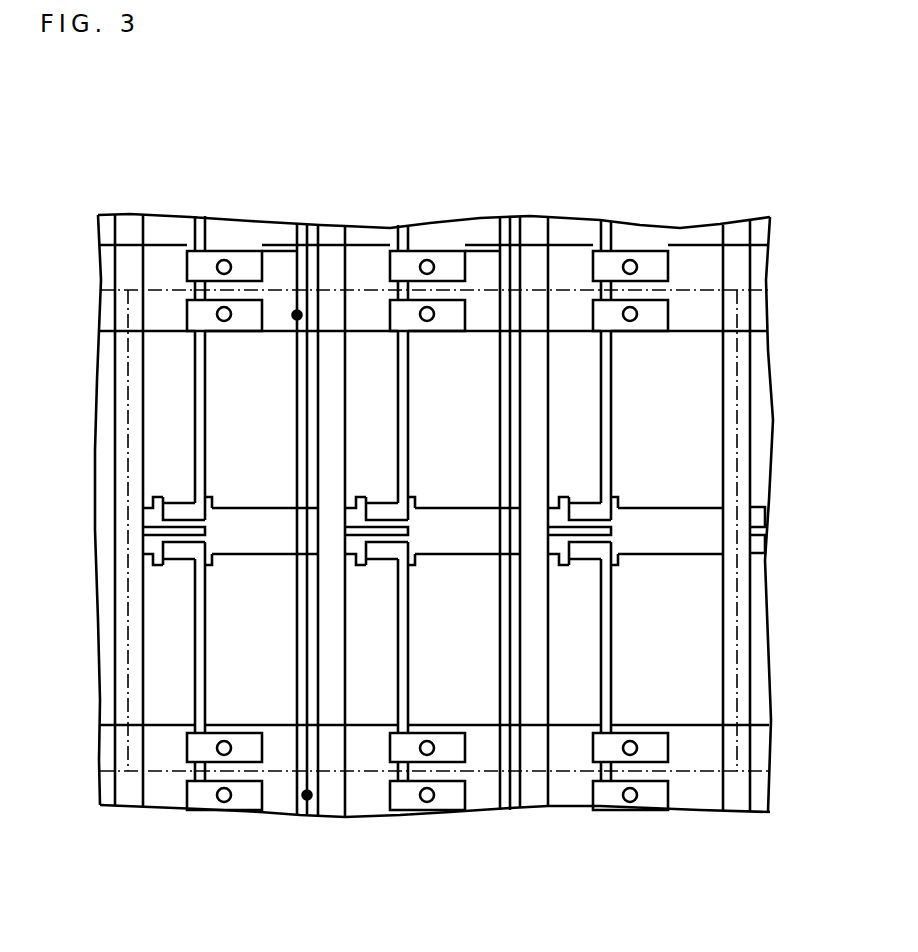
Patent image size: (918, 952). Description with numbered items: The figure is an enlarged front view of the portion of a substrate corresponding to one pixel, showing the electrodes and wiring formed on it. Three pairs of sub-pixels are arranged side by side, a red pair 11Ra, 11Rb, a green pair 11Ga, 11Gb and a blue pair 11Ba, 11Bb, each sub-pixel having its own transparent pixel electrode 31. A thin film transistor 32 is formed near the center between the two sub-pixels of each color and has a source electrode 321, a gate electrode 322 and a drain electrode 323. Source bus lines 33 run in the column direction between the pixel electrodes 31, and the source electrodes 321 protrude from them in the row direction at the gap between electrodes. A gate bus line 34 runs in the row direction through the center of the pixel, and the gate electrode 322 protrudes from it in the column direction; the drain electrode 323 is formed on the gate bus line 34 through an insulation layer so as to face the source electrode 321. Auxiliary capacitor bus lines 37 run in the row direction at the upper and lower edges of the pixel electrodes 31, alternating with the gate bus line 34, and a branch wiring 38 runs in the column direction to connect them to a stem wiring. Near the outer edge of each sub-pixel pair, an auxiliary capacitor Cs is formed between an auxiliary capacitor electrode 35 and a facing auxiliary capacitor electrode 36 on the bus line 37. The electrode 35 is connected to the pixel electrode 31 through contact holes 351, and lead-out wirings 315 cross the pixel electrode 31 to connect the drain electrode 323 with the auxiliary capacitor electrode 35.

The red sub-pixel (upper) 11Ra is at (275, 355).
The green sub-pixel (upper) 11Ga is at (490, 357).
The blue sub-pixel (upper) 11Ba is at (690, 357).
The red sub-pixel (lower) 11Rb is at (275, 702).
The green sub-pixel (lower) 11Gb is at (492, 702).
The blue sub-pixel (lower) 11Bb is at (697, 702).
The pixel electrode 31 is at (227, 420).
The lead-out wiring 315 is at (205, 393).
The thin film transistor 32 is at (157, 490).
The source electrode 321 is at (207, 532).
The gate electrode 322 is at (213, 497).
The drain electrode 323 is at (178, 500).
The source bus line 33 is at (150, 230).
The gate bus line 34 is at (130, 503).
The auxiliary capacitor electrode 35 is at (238, 263).
The contact hole 351 is at (222, 307).
The auxiliary capacitor electrode 36 is at (250, 310).
The auxiliary capacitor bus line 37 is at (108, 243).
The branch wiring 38 is at (298, 272).
The auxiliary capacitor Cs is at (182, 254).